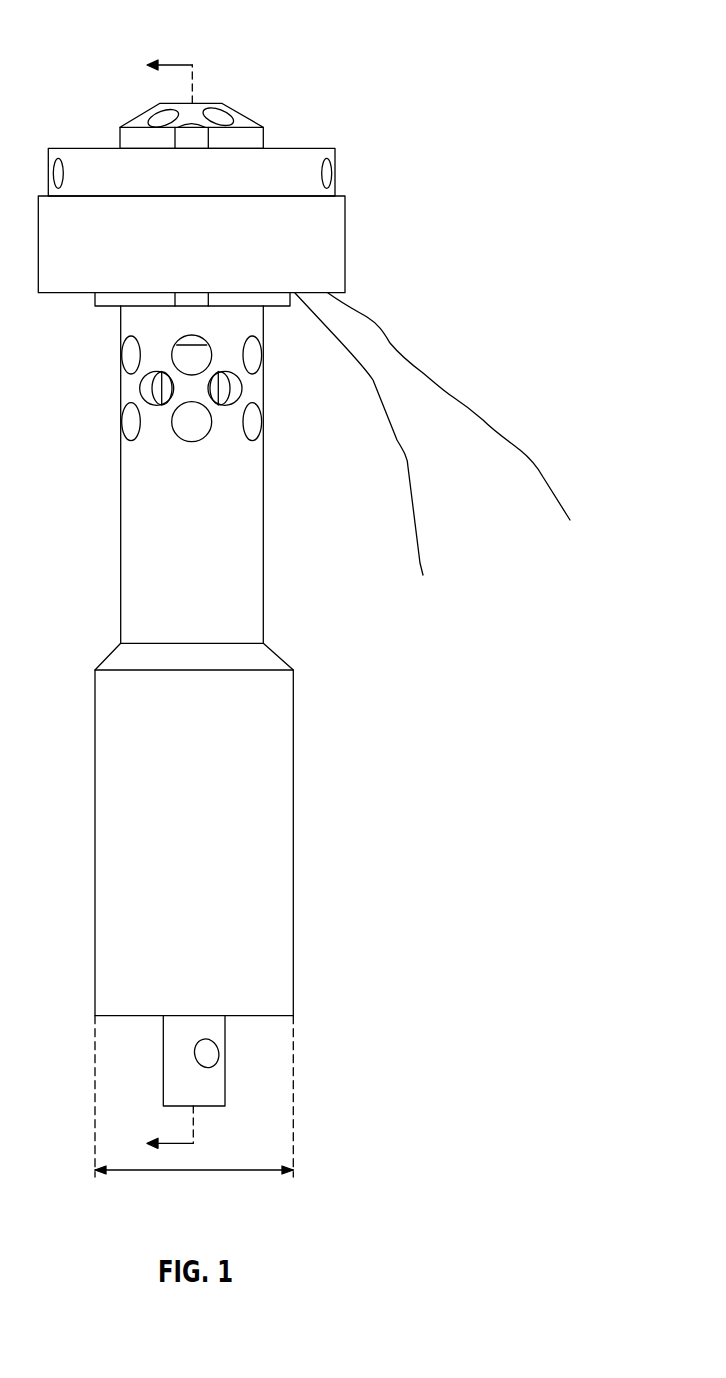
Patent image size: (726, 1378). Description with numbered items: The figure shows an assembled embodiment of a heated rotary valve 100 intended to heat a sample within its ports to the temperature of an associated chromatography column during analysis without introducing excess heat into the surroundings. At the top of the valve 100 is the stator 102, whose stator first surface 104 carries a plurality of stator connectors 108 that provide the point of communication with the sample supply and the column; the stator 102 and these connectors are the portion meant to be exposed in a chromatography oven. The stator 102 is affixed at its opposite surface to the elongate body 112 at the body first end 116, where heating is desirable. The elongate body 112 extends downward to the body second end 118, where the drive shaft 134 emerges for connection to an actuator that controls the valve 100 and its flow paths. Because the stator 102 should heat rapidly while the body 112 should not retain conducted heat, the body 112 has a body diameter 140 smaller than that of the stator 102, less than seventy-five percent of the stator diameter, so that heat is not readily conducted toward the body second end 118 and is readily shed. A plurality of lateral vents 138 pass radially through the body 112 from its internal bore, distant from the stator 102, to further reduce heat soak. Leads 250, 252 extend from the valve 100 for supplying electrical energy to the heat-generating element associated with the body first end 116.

The heated rotary valve 100 is at (325, 34).
The stator 102 is at (197, 103).
The stator first surface 104 is at (283, 147).
The stator connectors 108 is at (225, 118).
The elongate body 112 is at (121, 528).
The body first end 116 is at (345, 245).
The body second end 118 is at (107, 1018).
The drive shaft 134 is at (225, 1066).
The lateral vents 138 is at (250, 423).
The body diameter 140 is at (197, 1172).
The lead 250 is at (488, 418).
The lead 252 is at (397, 447).